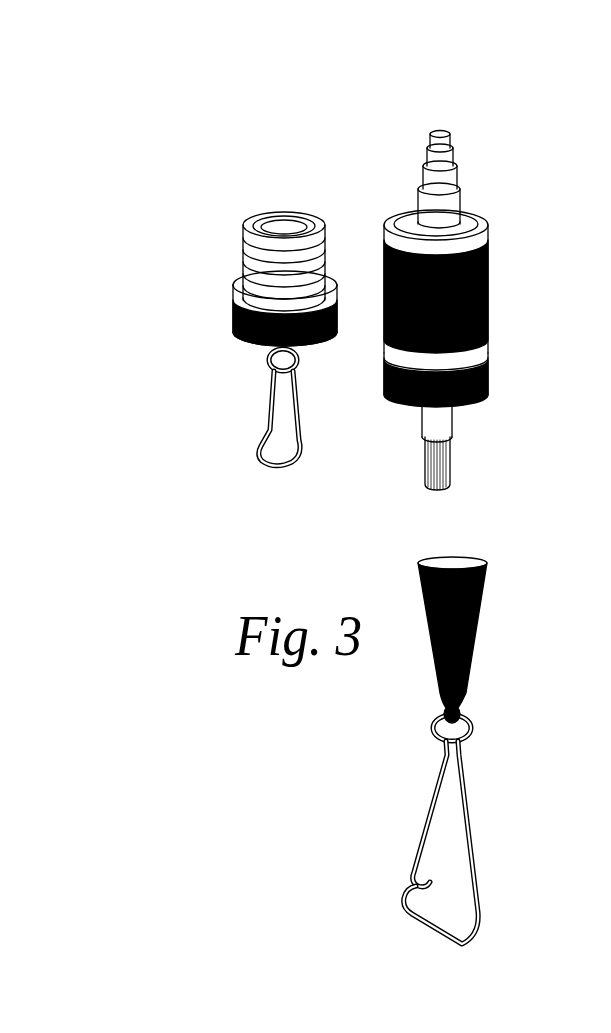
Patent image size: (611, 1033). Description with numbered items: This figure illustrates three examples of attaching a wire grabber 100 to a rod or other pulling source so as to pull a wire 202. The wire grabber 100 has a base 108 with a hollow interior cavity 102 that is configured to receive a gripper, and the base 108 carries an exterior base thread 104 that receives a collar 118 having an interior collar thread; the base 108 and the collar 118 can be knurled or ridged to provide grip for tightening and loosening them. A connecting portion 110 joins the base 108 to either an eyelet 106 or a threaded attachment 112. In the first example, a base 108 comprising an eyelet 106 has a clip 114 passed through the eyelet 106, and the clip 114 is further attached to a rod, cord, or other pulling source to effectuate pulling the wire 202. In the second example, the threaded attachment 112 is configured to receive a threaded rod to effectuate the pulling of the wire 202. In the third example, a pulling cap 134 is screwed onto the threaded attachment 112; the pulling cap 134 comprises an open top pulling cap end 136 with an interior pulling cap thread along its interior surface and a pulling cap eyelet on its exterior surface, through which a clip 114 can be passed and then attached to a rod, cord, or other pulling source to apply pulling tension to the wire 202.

The wire grabber 100 is at (366, 128).
The interior cavity 102 is at (287, 224).
The exterior base thread 104 is at (250, 262).
The eyelet 106 is at (268, 368).
The base 108 is at (248, 344).
The connecting portion 110 is at (448, 428).
The threaded attachment 112 is at (447, 484).
The clip 114 is at (263, 445).
The collar 118 is at (487, 253).
The pulling cap 134 is at (478, 645).
The top pulling cap end 136 is at (473, 557).
The wire 202 is at (447, 180).